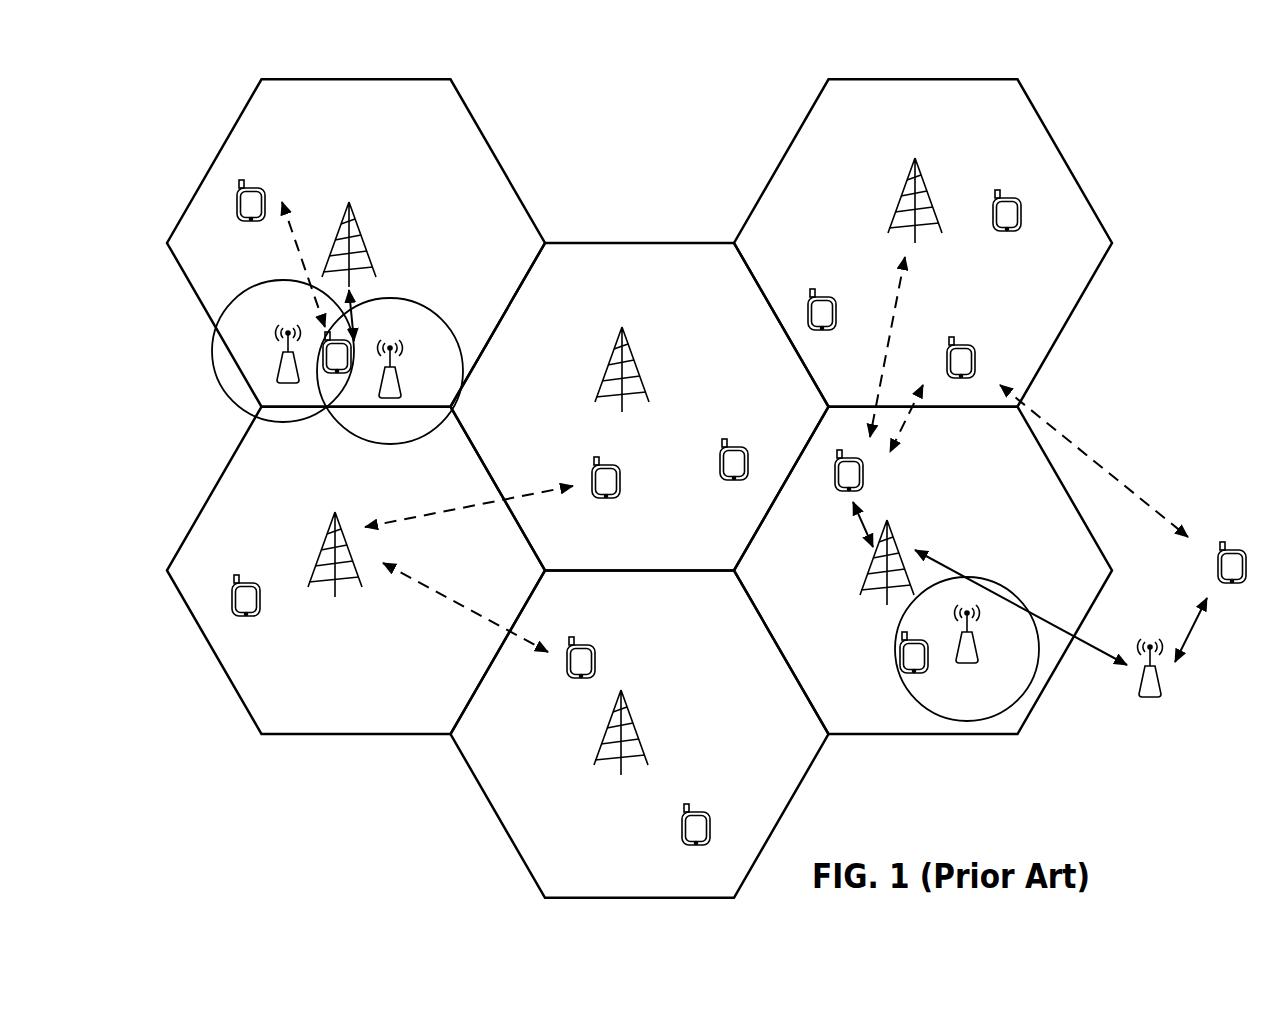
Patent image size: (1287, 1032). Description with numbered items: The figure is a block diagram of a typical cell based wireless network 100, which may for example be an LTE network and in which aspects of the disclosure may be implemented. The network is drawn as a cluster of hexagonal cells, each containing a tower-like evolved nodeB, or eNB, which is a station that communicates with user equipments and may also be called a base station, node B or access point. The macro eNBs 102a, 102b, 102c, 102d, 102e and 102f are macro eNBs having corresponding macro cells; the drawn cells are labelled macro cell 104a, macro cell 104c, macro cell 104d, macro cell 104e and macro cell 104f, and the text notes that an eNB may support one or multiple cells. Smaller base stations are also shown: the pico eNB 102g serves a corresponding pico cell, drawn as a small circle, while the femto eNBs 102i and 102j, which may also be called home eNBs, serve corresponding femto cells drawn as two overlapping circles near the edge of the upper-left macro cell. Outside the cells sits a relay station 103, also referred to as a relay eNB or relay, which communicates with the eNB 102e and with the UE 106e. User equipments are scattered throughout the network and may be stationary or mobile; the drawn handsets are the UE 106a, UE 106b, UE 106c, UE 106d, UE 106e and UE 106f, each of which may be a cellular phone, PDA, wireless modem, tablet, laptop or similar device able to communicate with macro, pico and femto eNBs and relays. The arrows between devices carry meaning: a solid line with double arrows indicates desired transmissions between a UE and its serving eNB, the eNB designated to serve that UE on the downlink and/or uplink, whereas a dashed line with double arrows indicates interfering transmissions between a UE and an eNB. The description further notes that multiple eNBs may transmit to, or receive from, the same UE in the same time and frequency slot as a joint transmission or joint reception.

The wireless network 100 is at (1234, 378).
The macro eNB 102a is at (367, 208).
The macro eNB 102b is at (347, 528).
The macro eNB 102c is at (630, 355).
The macro eNB 102d is at (630, 707).
The macro eNB 102e is at (920, 172).
The macro eNB 102f is at (888, 515).
The pico eNB 102g is at (967, 670).
The femto eNB 102i is at (270, 375).
The femto eNB 102j is at (407, 337).
The relay station 103 is at (1153, 698).
The macro cell 104a is at (495, 157).
The macro cell 104c is at (605, 243).
The macro cell 104d is at (777, 823).
The macro cell 104e is at (1071, 503).
The macro cell 104f is at (1085, 199).
The UE 106a is at (253, 182).
The UE 106b is at (235, 567).
The UE 106c is at (590, 460).
The UE 106d is at (580, 632).
The UE 106e is at (1245, 577).
The UE 106f is at (1017, 198).